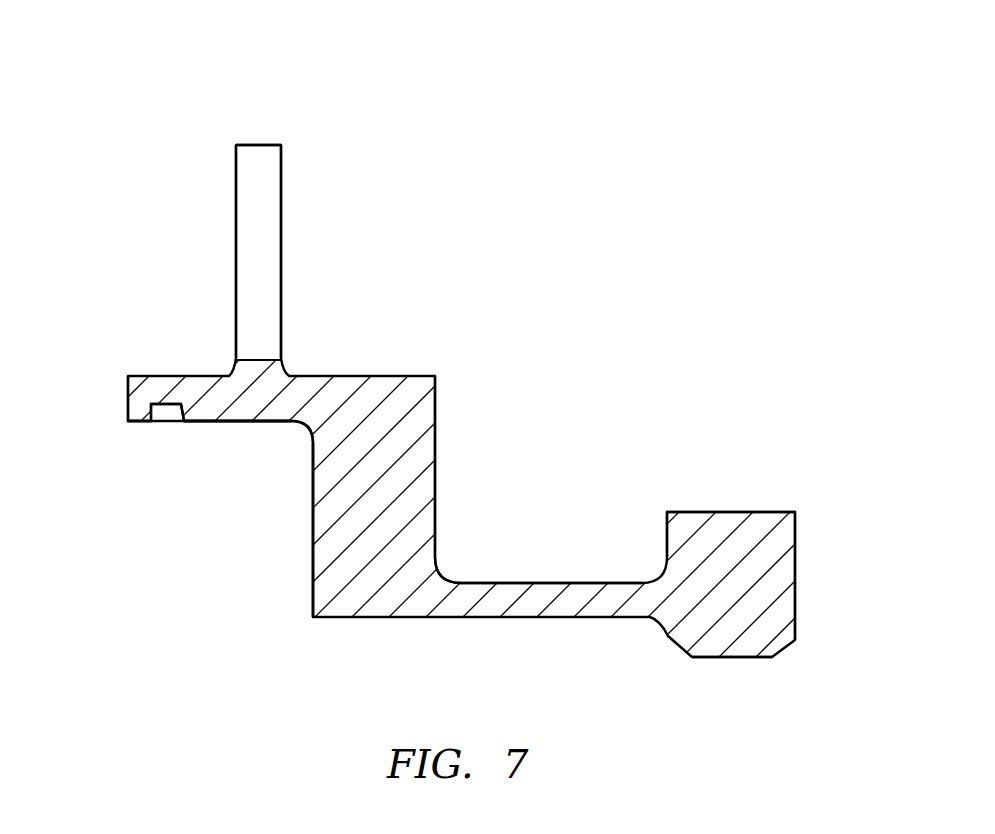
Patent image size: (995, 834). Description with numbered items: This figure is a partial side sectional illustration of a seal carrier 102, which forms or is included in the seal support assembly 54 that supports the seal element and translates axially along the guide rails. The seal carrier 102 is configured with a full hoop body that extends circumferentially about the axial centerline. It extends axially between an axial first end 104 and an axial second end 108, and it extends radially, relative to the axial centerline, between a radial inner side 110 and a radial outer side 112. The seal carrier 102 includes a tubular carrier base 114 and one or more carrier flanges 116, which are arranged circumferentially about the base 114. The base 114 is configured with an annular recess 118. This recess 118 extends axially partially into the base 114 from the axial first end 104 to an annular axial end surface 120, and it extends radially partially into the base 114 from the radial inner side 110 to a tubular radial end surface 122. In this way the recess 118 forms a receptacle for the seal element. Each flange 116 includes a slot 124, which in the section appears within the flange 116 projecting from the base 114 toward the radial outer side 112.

The seal support assembly 54 is at (593, 240).
The seal carrier 102 is at (497, 505).
The axial first end 104 is at (128, 395).
The axial second end 108 is at (795, 583).
The radial inner side 110 is at (723, 658).
The radial outer side 112 is at (261, 145).
The tubular carrier base 114 is at (455, 474).
The carrier flange 116 is at (292, 216).
The annular recess 118 is at (176, 535).
The axial end surface 120 is at (313, 557).
The radial end surface 122 is at (229, 422).
The slot 124 is at (266, 257).